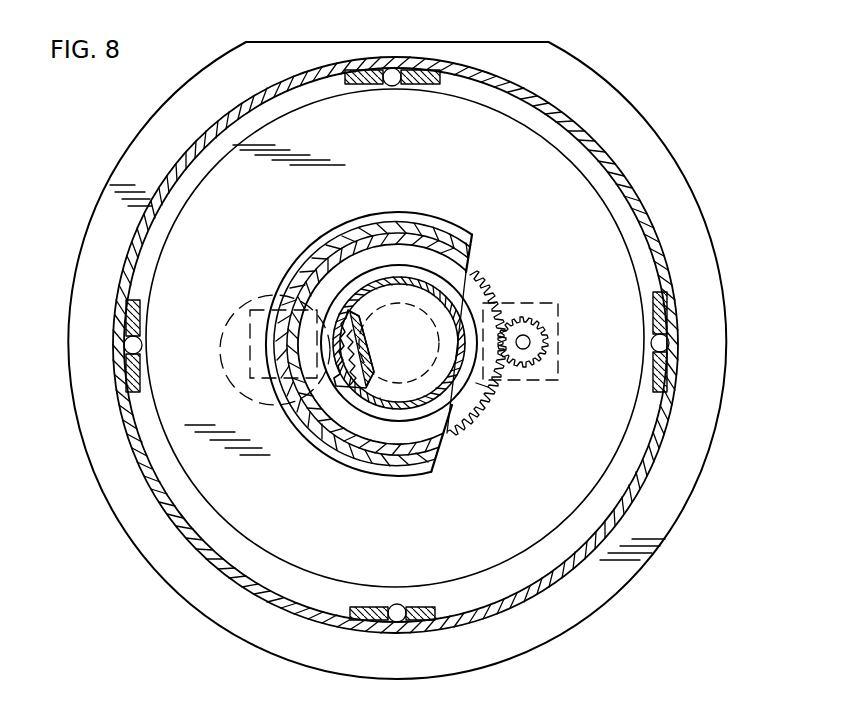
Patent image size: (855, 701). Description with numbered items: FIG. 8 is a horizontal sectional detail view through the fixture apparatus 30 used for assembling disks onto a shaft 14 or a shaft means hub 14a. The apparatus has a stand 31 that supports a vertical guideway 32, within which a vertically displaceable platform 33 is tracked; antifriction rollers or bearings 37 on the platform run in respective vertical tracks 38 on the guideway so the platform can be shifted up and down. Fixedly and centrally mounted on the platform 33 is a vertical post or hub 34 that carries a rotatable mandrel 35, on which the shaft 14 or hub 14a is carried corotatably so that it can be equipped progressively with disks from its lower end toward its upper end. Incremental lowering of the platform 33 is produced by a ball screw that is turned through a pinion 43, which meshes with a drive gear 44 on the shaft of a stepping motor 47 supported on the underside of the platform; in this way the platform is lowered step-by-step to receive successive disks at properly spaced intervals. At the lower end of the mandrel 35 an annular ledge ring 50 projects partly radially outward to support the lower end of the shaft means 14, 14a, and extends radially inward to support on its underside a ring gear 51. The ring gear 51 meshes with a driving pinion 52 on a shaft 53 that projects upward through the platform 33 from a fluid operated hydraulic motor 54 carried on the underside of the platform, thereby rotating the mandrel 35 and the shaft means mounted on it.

The fixture apparatus 30 is at (370, 360).
The stand 31 is at (125, 152).
The vertical guideway 32 is at (548, 114).
The platform 33 is at (496, 517).
The shaft 14 is at (387, 328).
The shaft means hub 14a is at (420, 225).
The vertical post or hub 34 is at (345, 298).
The rotatable mandrel 35 is at (352, 290).
The antifriction rollers or bearings 37 is at (392, 70).
The vertical tracks 38 is at (410, 86).
The pinion 43 is at (370, 364).
The drive gear 44 is at (358, 323).
The stepping motor 47 is at (255, 402).
The annular ledge ring 50 is at (447, 433).
The ring gear 51 is at (488, 390).
The driving pinion 52 is at (548, 347).
The shaft 53 is at (523, 336).
The hydraulic motor 54 is at (558, 332).